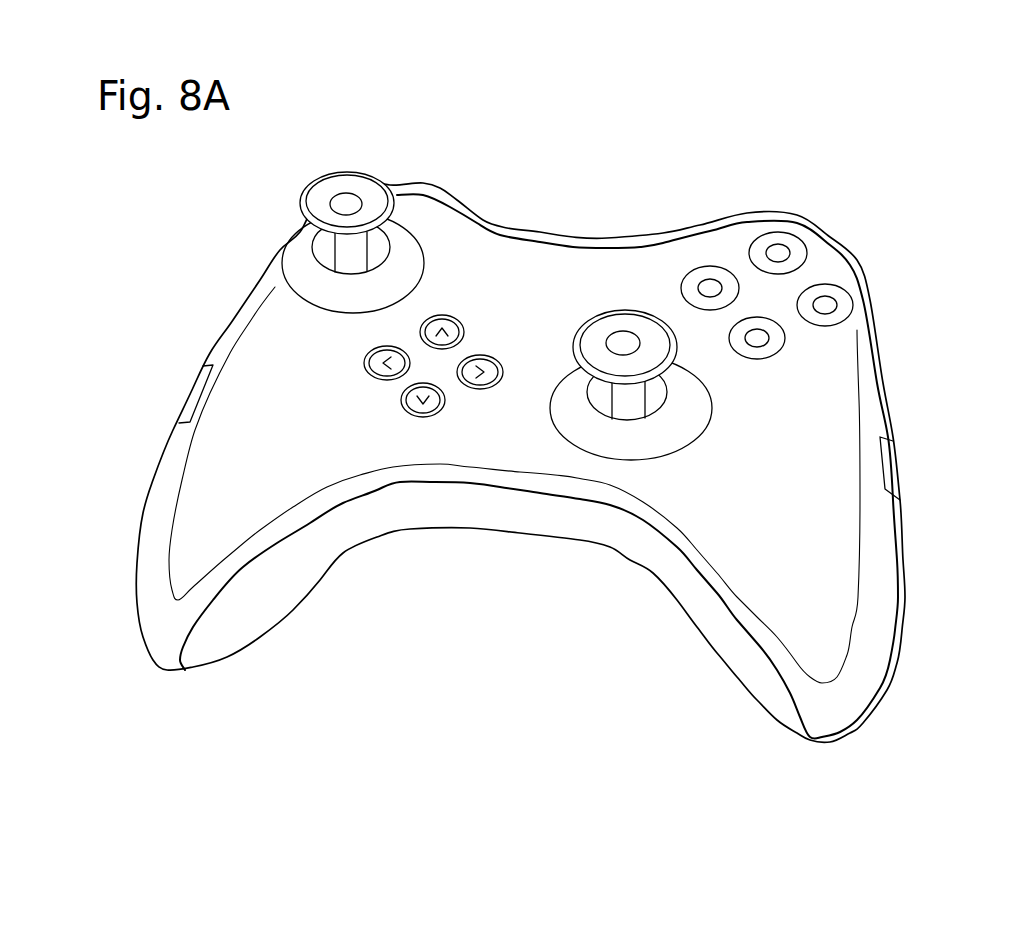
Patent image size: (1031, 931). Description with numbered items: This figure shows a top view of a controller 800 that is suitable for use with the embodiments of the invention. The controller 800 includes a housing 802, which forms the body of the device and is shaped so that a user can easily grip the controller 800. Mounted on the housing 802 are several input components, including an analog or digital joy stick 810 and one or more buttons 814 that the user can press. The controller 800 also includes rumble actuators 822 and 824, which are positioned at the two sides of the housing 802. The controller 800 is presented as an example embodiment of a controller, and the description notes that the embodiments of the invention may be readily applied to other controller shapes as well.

The controller 800 is at (556, 467).
The housing 802 is at (870, 388).
The joy stick 810 is at (585, 338).
The button 814 is at (780, 250).
The rumble actuator 822 is at (900, 478).
The rumble actuator 824 is at (190, 395).